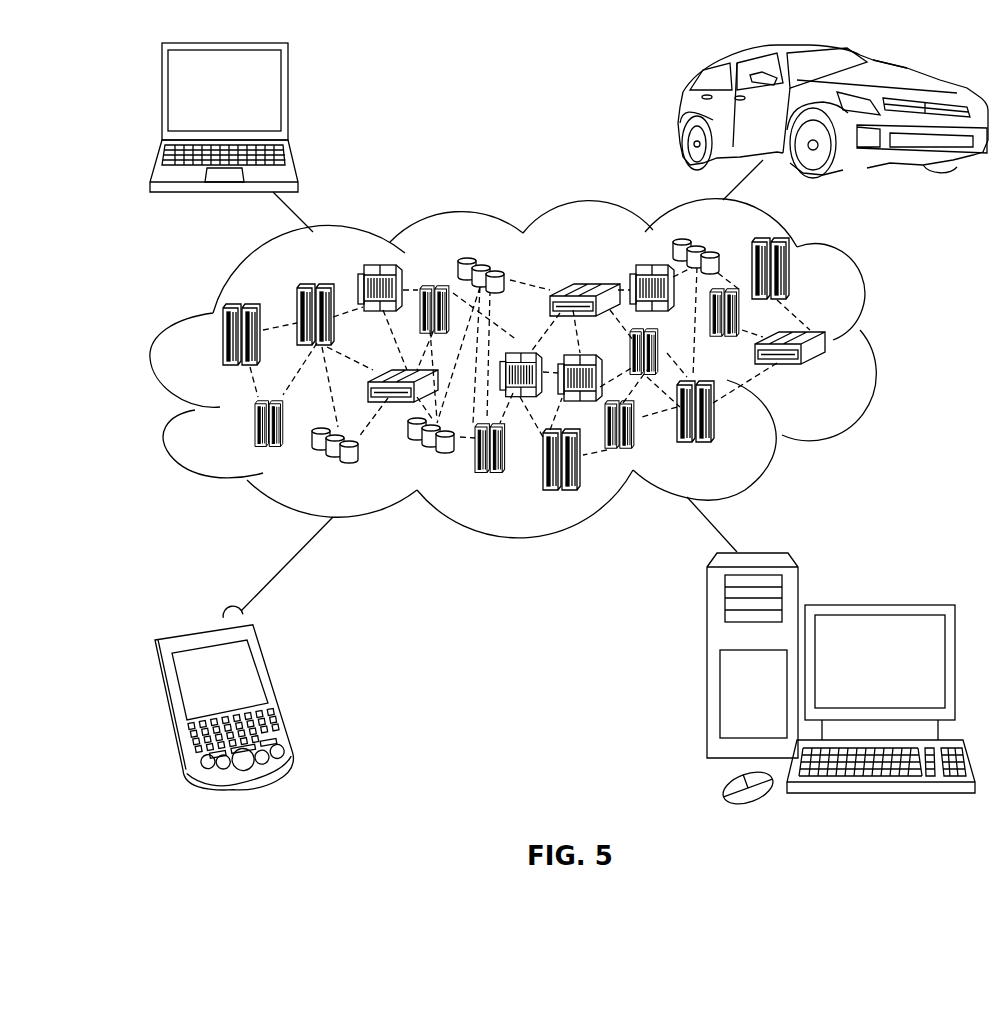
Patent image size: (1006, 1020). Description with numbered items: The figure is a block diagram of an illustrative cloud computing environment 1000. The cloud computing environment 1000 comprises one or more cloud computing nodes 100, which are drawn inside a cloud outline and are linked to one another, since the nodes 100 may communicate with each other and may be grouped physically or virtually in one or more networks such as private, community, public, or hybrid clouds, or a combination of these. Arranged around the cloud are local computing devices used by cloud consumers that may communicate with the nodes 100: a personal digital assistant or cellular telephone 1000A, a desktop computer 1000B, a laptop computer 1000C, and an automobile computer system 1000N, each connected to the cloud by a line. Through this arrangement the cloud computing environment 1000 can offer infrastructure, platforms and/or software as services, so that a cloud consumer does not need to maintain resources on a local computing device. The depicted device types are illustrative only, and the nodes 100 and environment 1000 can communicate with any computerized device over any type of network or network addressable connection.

The cloud computing nodes 100 is at (551, 368).
The cloud computing environment 1000 is at (880, 344).
The personal digital assistant (PDA) or cellular telephone 1000A is at (278, 688).
The desktop computer 1000B is at (877, 604).
The laptop computer 1000C is at (288, 98).
The automobile computer system 1000N is at (680, 109).